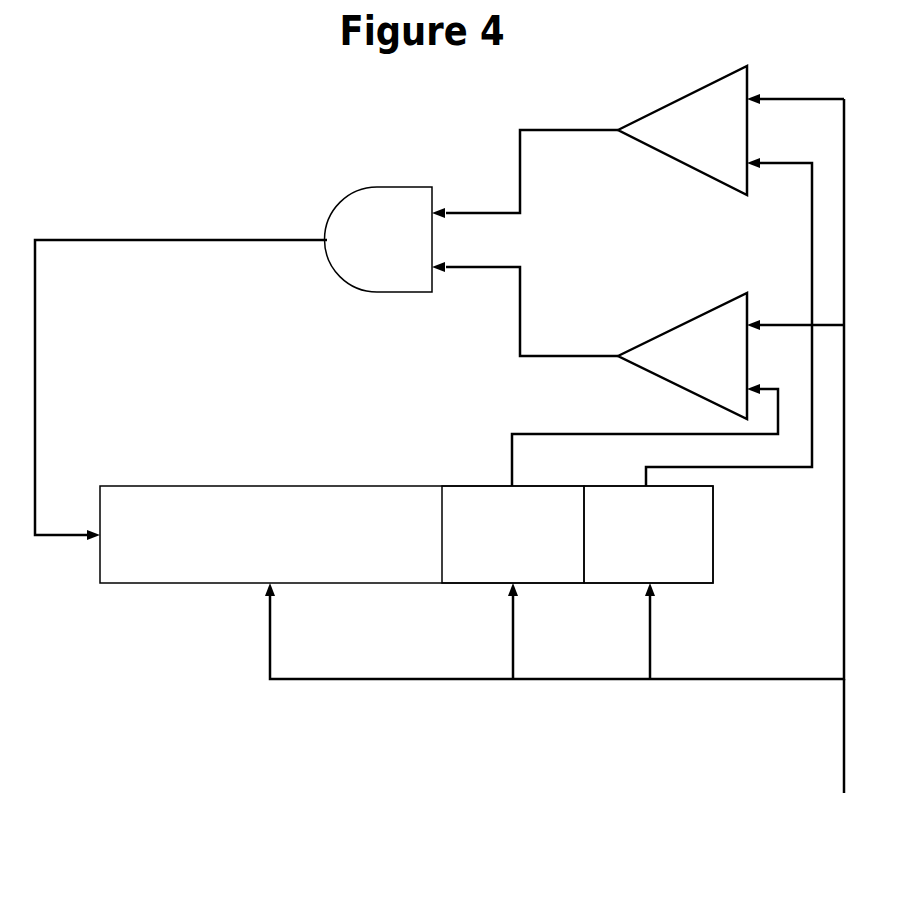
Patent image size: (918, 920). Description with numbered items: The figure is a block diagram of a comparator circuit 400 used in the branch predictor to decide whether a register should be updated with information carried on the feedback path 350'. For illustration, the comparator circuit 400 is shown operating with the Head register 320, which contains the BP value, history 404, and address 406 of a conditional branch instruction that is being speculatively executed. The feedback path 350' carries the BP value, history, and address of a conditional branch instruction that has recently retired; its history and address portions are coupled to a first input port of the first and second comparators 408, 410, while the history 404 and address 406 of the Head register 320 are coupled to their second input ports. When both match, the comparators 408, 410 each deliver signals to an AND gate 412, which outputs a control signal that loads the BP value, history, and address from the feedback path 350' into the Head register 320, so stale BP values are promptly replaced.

The comparator circuit 400 is at (176, 106).
The Head register 320 is at (77, 597).
The history 404 is at (487, 583).
The address 406 is at (625, 583).
The first comparator 408 is at (707, 177).
The second comparator 410 is at (660, 332).
The AND gate 412 is at (378, 293).
The feedback path 350' is at (792, 785).